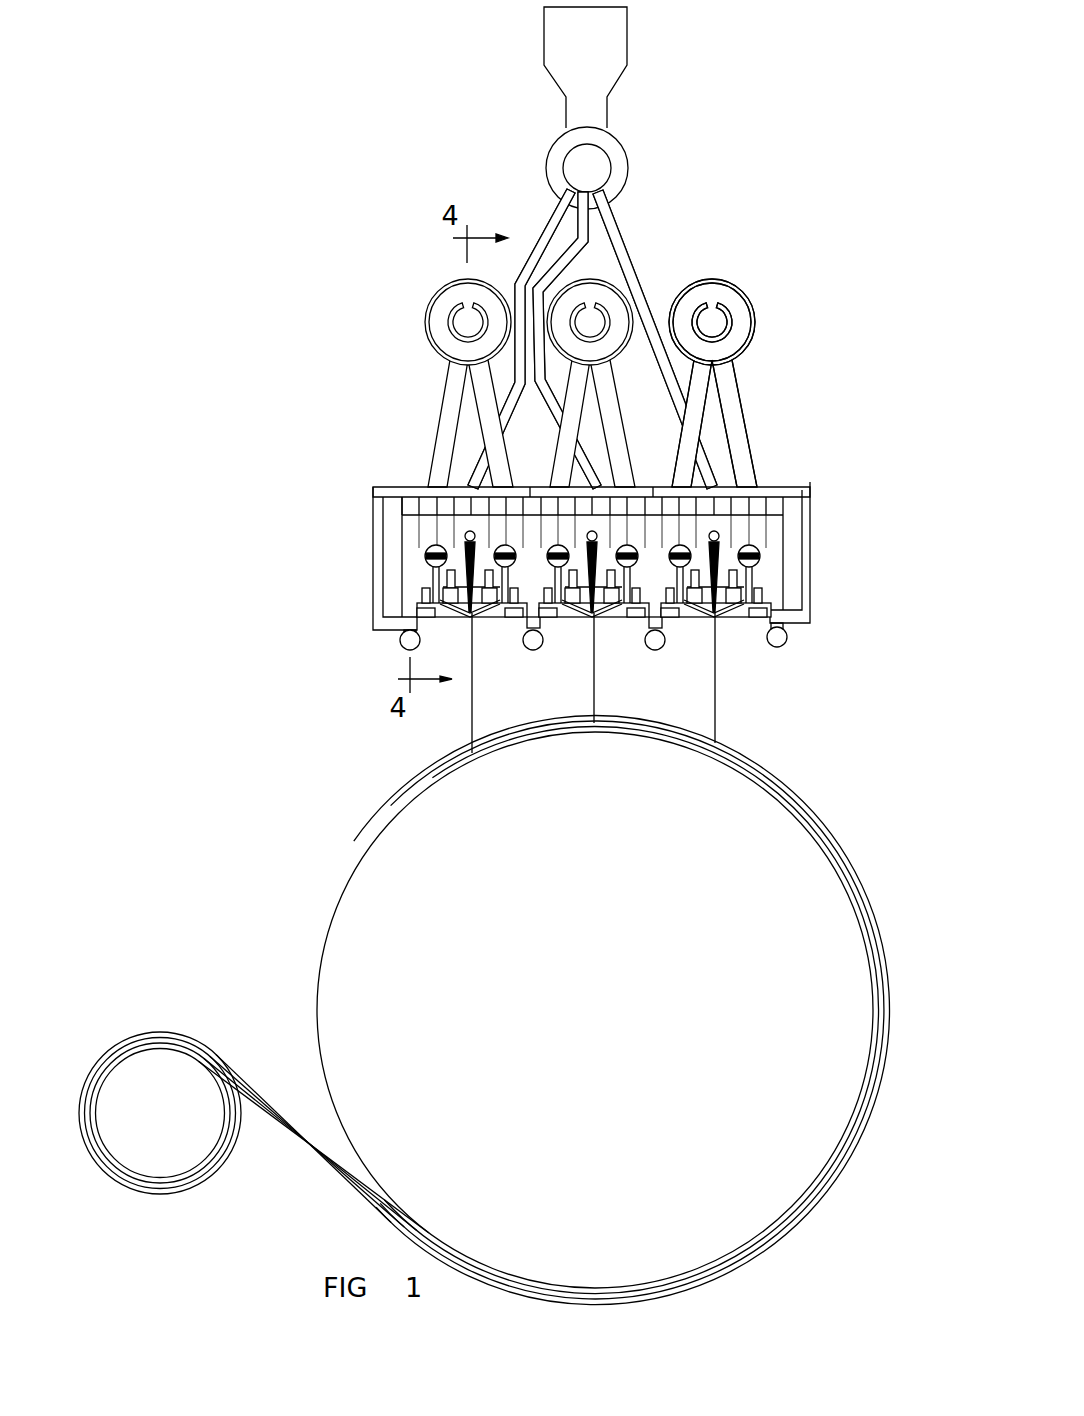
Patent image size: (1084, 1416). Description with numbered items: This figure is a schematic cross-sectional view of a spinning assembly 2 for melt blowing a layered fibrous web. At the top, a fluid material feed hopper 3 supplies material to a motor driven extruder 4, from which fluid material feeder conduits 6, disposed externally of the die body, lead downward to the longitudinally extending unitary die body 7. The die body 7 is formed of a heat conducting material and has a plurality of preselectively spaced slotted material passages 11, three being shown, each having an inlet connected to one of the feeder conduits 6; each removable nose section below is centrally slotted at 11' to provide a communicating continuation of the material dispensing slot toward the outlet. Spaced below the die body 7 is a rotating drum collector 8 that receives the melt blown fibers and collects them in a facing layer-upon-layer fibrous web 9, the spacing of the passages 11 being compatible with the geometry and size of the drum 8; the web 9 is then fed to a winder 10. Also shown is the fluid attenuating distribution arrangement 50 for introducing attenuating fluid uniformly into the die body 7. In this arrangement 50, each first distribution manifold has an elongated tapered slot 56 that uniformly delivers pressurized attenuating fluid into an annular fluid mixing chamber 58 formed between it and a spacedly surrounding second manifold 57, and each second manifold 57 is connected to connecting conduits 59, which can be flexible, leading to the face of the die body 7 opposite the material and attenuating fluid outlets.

The spinning assembly 2 is at (705, 172).
The fluid material feed hopper 3 is at (634, 34).
The extruder 4 is at (628, 135).
The fluid material feeder conduits 6 is at (550, 220).
The unitary die body 7 is at (815, 516).
The rotating drum collector 8 is at (573, 1031).
The layered fibrous web 9 is at (822, 818).
The winder 10 is at (176, 1133).
The slotted material passages 11 is at (592, 564).
The nose section slot 11' is at (593, 683).
The fluid attenuating distribution arrangement 50 is at (742, 370).
The tapered slot 56 is at (712, 302).
The second manifold 57 is at (750, 293).
The annular fluid mixing chamber 58 is at (737, 322).
The connecting conduits 59 is at (738, 440).